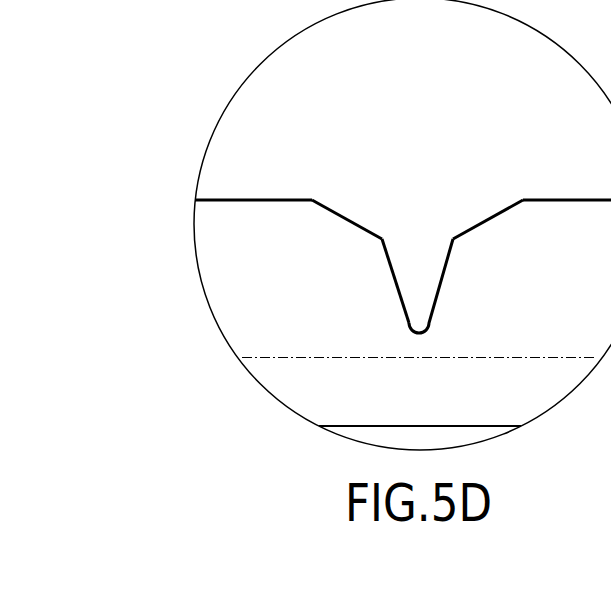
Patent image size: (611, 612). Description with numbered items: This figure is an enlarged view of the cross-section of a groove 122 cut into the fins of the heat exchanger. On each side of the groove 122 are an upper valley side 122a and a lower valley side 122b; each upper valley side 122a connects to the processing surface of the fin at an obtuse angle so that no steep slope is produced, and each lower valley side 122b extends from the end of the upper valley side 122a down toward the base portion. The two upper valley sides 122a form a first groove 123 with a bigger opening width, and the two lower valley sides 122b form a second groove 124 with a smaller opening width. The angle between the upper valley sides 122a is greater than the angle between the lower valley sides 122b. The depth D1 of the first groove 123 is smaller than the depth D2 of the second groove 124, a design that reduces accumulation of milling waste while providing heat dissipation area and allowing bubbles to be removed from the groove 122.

The groove 122 is at (424, 242).
The upper valley side 122a is at (333, 208).
The lower valley side 122b is at (390, 255).
The first groove 123 is at (343, 217).
The second groove 124 is at (388, 258).
The depth of the first groove D1 is at (382, 240).
The depth of the second groove D2 is at (419, 334).